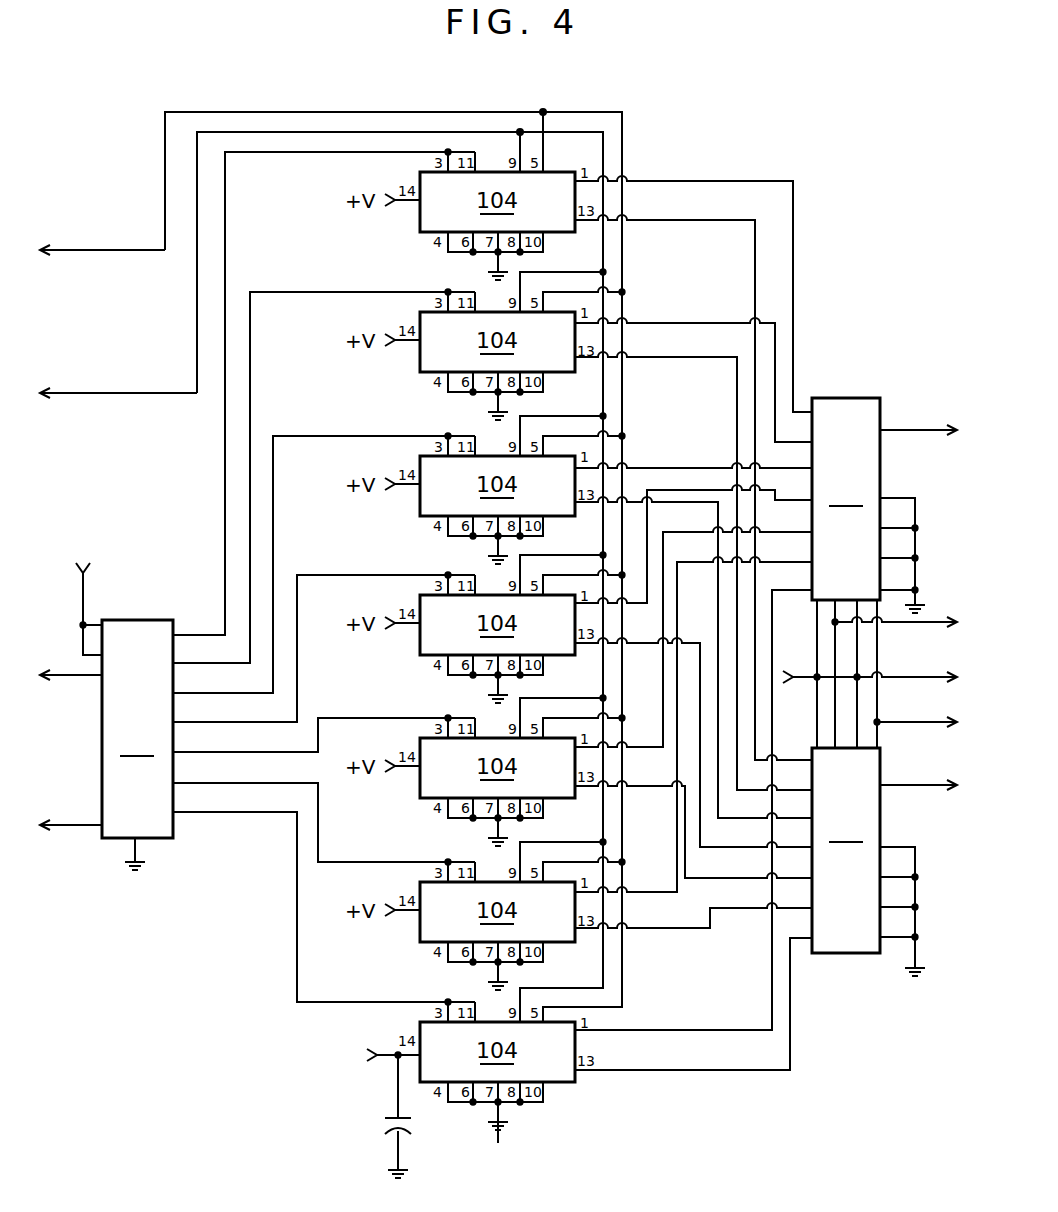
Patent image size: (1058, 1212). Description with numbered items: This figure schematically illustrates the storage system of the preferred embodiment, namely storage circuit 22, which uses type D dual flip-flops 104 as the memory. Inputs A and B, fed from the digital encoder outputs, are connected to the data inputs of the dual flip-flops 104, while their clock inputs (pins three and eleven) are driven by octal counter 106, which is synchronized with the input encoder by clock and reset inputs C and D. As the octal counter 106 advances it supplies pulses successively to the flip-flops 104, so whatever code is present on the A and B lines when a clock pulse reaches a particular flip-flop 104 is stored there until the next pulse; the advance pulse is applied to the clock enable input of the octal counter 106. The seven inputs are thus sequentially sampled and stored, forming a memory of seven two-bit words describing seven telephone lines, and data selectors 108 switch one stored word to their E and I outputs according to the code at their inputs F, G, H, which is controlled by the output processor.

The storage circuit 22 is at (170, 1031).
The dual flip-flop 104 is at (460, 665).
The octal counter 106 is at (112, 703).
The data selector 108 is at (863, 686).